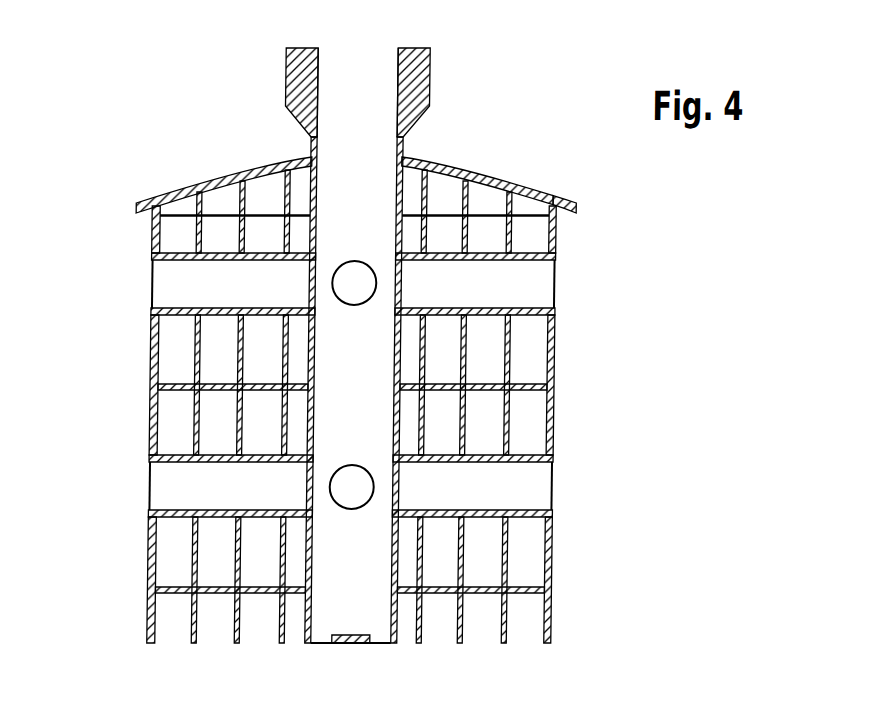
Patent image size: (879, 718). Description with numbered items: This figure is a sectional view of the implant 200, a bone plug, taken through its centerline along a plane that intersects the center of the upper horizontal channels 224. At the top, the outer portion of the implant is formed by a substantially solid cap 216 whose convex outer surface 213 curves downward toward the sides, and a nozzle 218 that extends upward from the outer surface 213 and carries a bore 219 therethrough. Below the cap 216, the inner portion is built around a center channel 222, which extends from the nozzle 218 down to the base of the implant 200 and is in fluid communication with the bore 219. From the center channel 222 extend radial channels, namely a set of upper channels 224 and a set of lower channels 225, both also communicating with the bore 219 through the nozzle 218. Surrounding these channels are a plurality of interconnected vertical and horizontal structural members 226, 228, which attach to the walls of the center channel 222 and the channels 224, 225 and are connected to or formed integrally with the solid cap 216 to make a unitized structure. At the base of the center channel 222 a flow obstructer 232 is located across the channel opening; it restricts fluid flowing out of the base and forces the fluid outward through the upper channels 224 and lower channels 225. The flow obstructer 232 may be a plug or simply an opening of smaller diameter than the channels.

The implant 200 is at (114, 108).
The nozzle 218 is at (414, 50).
The bore 219 is at (392, 95).
The convex outer surface 213 is at (520, 183).
The solid cap 216 is at (548, 200).
The center channel 222 is at (377, 403).
The upper channels 224 is at (486, 296).
The lower channels 225 is at (488, 498).
The vertical structural members 226 is at (554, 348).
The horizontal structural members 228 is at (520, 587).
The flow obstructer 232 is at (360, 645).